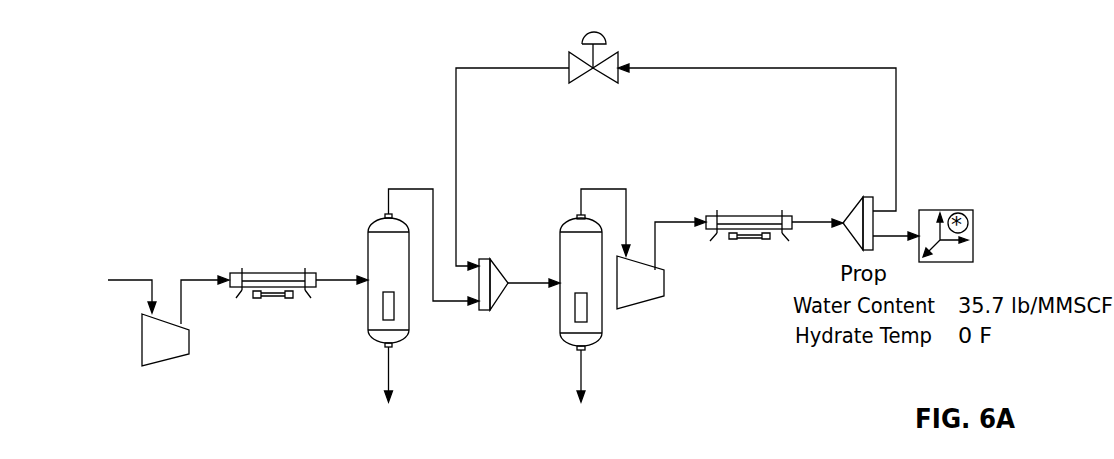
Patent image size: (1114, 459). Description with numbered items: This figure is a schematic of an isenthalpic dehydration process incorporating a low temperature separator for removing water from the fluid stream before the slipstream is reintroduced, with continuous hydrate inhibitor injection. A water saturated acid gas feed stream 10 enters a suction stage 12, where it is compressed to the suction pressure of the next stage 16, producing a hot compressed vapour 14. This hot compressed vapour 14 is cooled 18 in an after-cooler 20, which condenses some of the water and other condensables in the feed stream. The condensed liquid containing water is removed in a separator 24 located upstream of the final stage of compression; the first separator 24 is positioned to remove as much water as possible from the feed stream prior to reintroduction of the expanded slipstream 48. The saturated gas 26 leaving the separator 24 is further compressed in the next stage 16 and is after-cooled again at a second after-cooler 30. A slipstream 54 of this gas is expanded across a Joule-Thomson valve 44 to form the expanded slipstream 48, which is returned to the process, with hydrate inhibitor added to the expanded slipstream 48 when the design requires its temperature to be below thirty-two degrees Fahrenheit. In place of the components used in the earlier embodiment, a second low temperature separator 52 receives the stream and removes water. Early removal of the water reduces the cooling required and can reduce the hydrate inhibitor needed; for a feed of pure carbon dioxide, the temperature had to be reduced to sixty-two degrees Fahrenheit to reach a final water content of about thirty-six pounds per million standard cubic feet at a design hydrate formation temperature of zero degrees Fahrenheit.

The water saturated acid gas feed stream 10 is at (132, 279).
The suction stage 12 is at (167, 363).
The hot compressed vapour 14 is at (200, 279).
The next stage 16 is at (667, 283).
The cooled compressed vapour 18 is at (332, 283).
The after-cooler 20 is at (275, 272).
The separator 24 is at (375, 218).
The saturated gas 26 is at (412, 186).
The after-cooler 30 is at (808, 218).
The Joule-Thomson Valve 44 is at (618, 60).
The expanded slipstream 48 is at (455, 101).
The second low temperature separator 52 is at (603, 317).
The slipstream 54 is at (833, 68).